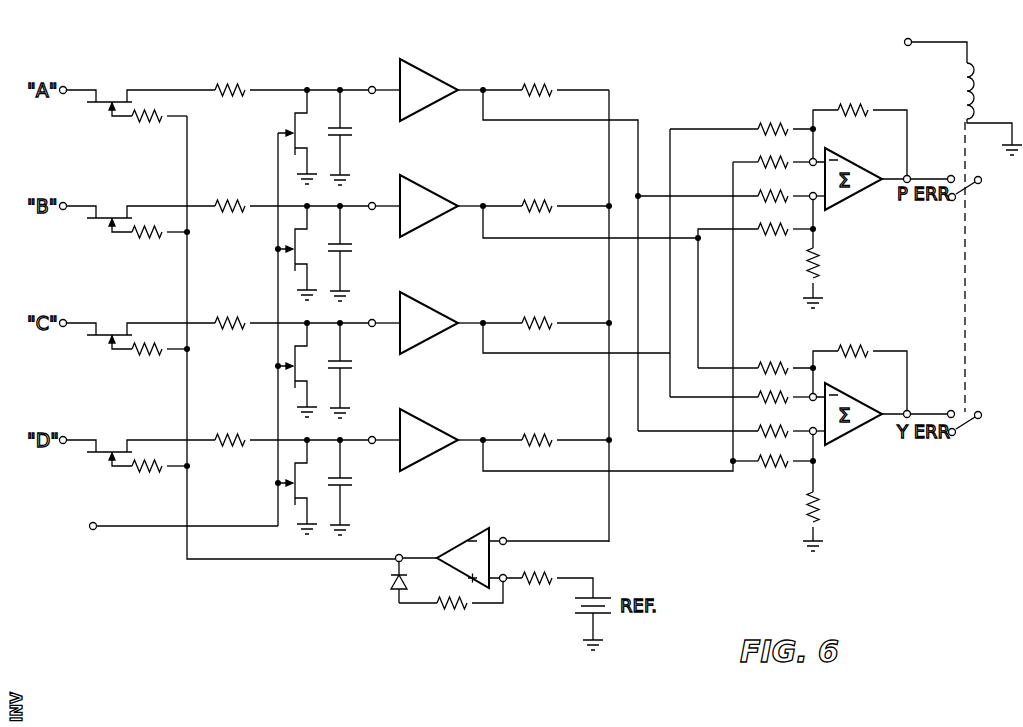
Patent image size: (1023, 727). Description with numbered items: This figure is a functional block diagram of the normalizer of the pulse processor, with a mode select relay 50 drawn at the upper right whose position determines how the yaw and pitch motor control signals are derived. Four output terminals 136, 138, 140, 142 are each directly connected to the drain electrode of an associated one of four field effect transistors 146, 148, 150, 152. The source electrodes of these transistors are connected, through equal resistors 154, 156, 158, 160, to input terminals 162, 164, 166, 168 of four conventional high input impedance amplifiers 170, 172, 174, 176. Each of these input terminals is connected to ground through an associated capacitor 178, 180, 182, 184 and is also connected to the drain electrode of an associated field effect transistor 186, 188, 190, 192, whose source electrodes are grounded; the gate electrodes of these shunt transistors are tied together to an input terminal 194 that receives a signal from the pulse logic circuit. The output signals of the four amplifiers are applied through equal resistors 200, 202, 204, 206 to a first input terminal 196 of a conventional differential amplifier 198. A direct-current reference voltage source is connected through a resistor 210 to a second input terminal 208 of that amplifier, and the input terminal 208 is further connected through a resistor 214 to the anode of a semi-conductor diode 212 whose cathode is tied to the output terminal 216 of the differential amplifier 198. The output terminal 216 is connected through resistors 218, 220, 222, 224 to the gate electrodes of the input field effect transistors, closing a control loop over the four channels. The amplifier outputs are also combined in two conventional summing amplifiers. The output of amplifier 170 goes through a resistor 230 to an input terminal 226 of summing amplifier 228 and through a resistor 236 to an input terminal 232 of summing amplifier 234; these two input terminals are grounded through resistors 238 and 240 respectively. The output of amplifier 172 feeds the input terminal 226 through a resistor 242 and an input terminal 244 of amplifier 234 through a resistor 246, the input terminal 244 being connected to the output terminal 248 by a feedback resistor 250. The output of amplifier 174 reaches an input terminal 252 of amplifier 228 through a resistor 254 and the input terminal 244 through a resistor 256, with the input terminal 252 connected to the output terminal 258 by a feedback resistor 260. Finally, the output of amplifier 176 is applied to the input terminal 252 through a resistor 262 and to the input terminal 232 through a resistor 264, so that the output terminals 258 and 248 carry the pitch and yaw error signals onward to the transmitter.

The mode select relay 50 is at (961, 74).
The output terminal 136 is at (66, 88).
The output terminal 138 is at (66, 204).
The output terminal 140 is at (66, 321).
The output terminal 142 is at (66, 438).
The field effect transistor 146 is at (125, 99).
The field effect transistor 148 is at (125, 215).
The field effect transistor 150 is at (125, 332).
The field effect transistor 152 is at (125, 449).
The resistor 154 is at (239, 82).
The resistor 156 is at (239, 198).
The resistor 158 is at (239, 315).
The resistor 160 is at (239, 432).
The input terminal 162 is at (372, 85).
The input terminal 164 is at (372, 201).
The input terminal 166 is at (372, 318).
The input terminal 168 is at (372, 435).
The high input impedance amplifier 170 is at (437, 85).
The high input impedance amplifier 172 is at (437, 201).
The high input impedance amplifier 174 is at (437, 318).
The high input impedance amplifier 176 is at (437, 435).
The capacitor 178 is at (352, 133).
The capacitor 180 is at (352, 249).
The capacitor 182 is at (352, 366).
The capacitor 184 is at (352, 483).
The field effect transistor 186 is at (291, 116).
The field effect transistor 188 is at (291, 232).
The field effect transistor 190 is at (291, 349).
The field effect transistor 192 is at (291, 466).
The input terminal 194 is at (90, 530).
The first input terminal 196 is at (508, 537).
The differential amplifier 198 is at (472, 532).
The resistor 200 is at (545, 82).
The resistor 202 is at (545, 198).
The resistor 204 is at (545, 315).
The resistor 206 is at (545, 432).
The second input terminal 208 is at (508, 583).
The resistor 210 is at (540, 572).
The semi-conductor diode 212 is at (388, 582).
The resistor 214 is at (449, 612).
The output terminal 216 is at (399, 553).
The resistor 218 is at (165, 123).
The resistor 220 is at (165, 239).
The resistor 222 is at (165, 356).
The resistor 224 is at (165, 473).
The input terminal 226 is at (818, 200).
The summing amplifier 228 is at (888, 176).
The resistor 230 is at (748, 194).
The input terminal 232 is at (818, 435).
The summing amplifier 234 is at (888, 411).
The resistor 236 is at (746, 430).
The resistor 238 is at (820, 265).
The resistor 240 is at (820, 509).
The resistor 242 is at (768, 243).
The input terminal 244 is at (817, 393).
The resistor 246 is at (777, 363).
The output terminal 248 is at (946, 411).
The resistor 250 is at (866, 346).
The input terminal 252 is at (817, 158).
The resistor 254 is at (776, 123).
The resistor 256 is at (746, 396).
The output terminal 258 is at (946, 175).
The resistor 260 is at (857, 104).
The resistor 262 is at (746, 158).
The resistor 264 is at (758, 476).